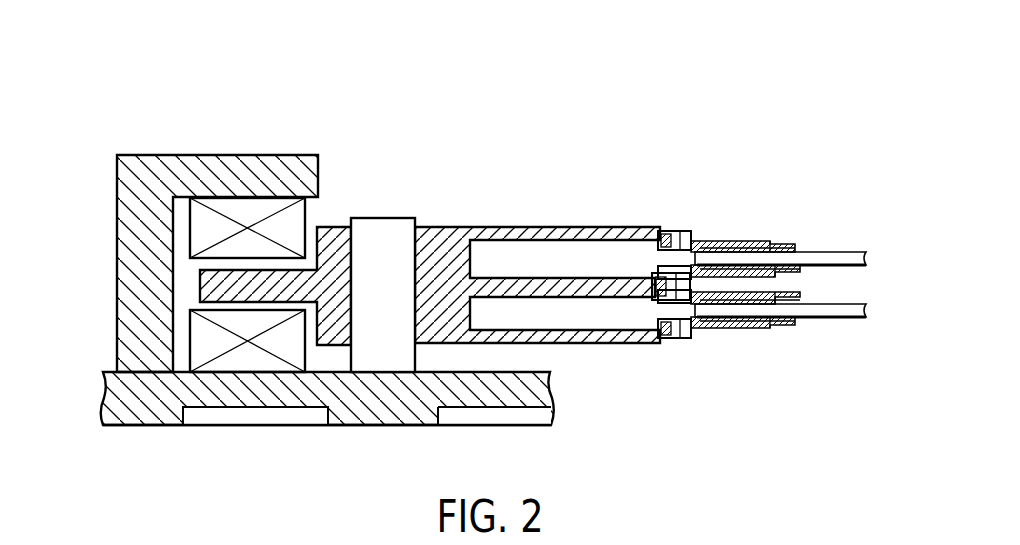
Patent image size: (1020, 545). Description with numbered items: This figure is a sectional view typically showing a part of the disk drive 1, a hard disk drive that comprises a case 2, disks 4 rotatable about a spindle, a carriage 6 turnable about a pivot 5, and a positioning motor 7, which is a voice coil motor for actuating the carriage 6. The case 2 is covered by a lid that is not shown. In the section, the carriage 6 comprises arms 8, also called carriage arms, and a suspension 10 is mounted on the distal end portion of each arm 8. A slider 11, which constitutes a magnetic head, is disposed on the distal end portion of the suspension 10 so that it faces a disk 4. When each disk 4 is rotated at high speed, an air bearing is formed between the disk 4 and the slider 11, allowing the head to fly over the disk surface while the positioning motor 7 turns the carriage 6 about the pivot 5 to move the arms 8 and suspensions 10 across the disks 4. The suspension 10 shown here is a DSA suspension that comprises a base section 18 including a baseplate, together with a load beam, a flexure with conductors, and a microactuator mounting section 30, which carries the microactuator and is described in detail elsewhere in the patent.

The disk drive 1 is at (258, 110).
The case 2 is at (153, 427).
The disk 4 is at (852, 252).
The pivot 5 is at (383, 217).
The carriage 6 is at (430, 272).
The positioning motor 7 is at (245, 357).
The arm 8 is at (615, 227).
The suspension 10 is at (768, 243).
The slider 11 is at (805, 244).
The base section 18 is at (693, 232).
The microactuator mounting section 30 is at (718, 241).